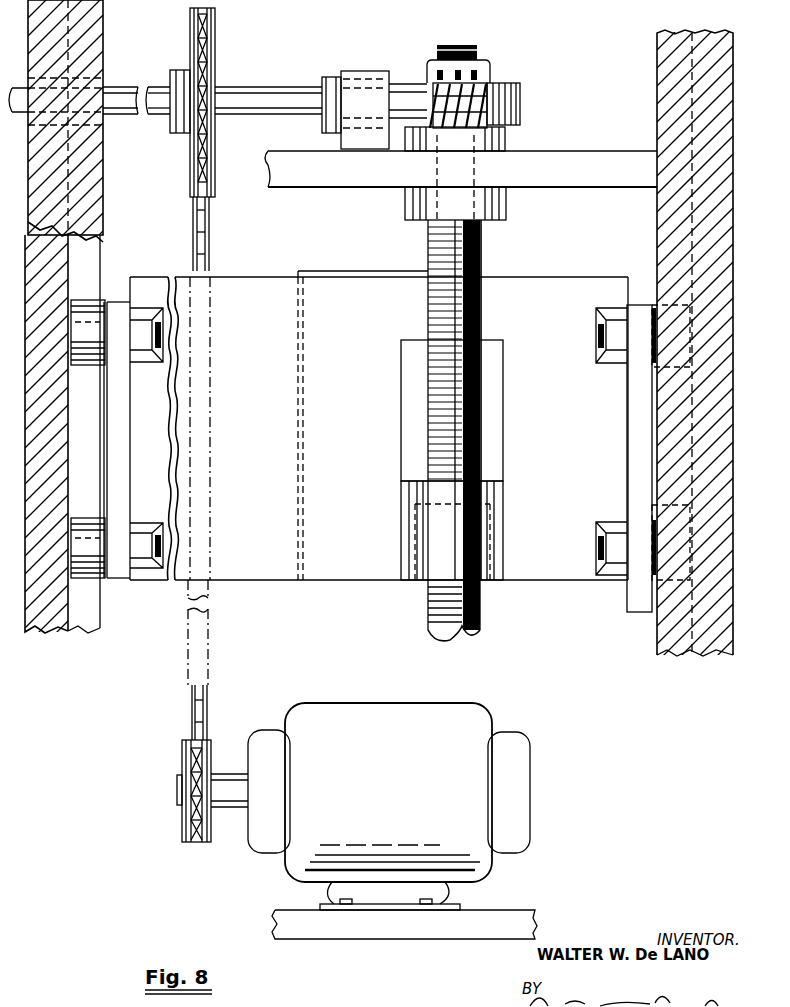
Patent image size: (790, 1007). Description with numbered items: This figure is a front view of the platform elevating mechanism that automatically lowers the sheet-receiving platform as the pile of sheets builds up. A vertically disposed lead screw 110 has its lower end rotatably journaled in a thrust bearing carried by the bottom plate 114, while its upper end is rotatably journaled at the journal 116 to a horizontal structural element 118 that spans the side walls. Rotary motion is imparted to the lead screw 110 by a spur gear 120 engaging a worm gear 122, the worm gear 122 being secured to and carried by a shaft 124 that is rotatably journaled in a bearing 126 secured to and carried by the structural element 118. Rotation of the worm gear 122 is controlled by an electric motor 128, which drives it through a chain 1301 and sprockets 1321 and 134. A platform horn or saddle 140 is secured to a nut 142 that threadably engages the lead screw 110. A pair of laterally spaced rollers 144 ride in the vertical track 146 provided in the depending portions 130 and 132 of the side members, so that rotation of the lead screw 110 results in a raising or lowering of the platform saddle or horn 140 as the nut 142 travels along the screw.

The lead screw 110 is at (434, 237).
The bottom plate 114 is at (512, 920).
The upper journal of the lead screw 116 is at (506, 205).
The horizontal structural element 118 is at (572, 160).
The spur gear 120 is at (519, 99).
The worm gear 122 is at (487, 80).
The shaft 124 is at (115, 98).
The bearing 126 is at (360, 76).
The electric motor 128 is at (472, 715).
The depending portion of side member 130 is at (40, 633).
The chain 1301 is at (208, 222).
The depending portion of side member 132 is at (724, 489).
The sprocket 1321 is at (206, 752).
The sprocket 134 is at (213, 22).
The platform horn or saddle 140 is at (538, 290).
The nut 142 is at (501, 502).
The rollers 144 is at (83, 366).
The vertical track 146 is at (92, 610).